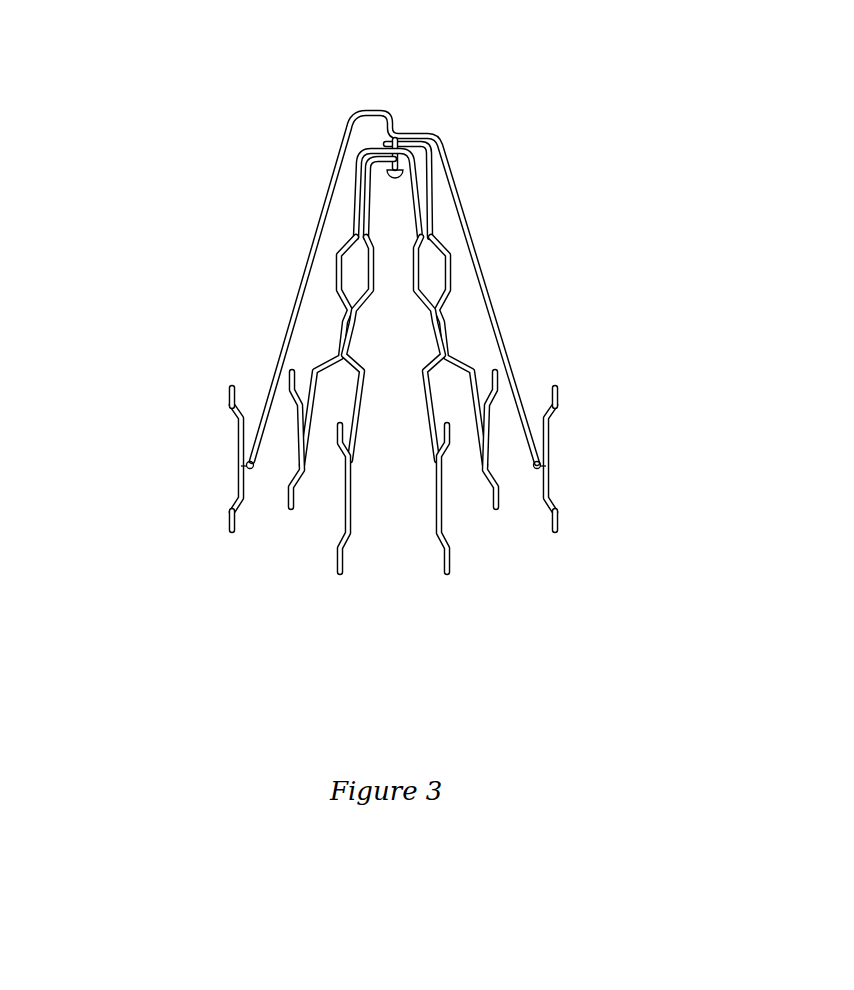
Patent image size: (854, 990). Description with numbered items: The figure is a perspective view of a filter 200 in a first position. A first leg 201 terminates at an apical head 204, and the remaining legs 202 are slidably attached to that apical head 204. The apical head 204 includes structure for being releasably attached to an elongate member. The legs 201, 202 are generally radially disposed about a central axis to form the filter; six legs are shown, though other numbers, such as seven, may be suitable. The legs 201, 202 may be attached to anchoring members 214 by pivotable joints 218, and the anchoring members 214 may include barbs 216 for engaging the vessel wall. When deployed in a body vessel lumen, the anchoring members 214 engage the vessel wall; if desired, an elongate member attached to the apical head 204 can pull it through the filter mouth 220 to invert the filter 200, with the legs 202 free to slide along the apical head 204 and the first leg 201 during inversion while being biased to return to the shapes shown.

The filter 200 is at (322, 78).
The first leg 201 is at (298, 294).
The remaining legs 202 is at (340, 268).
The apical head 204 is at (388, 108).
The anchoring members 214 is at (240, 445).
The barbs 216 is at (232, 400).
The pivotable joints 218 is at (250, 470).
The filter mouth 220 is at (392, 522).